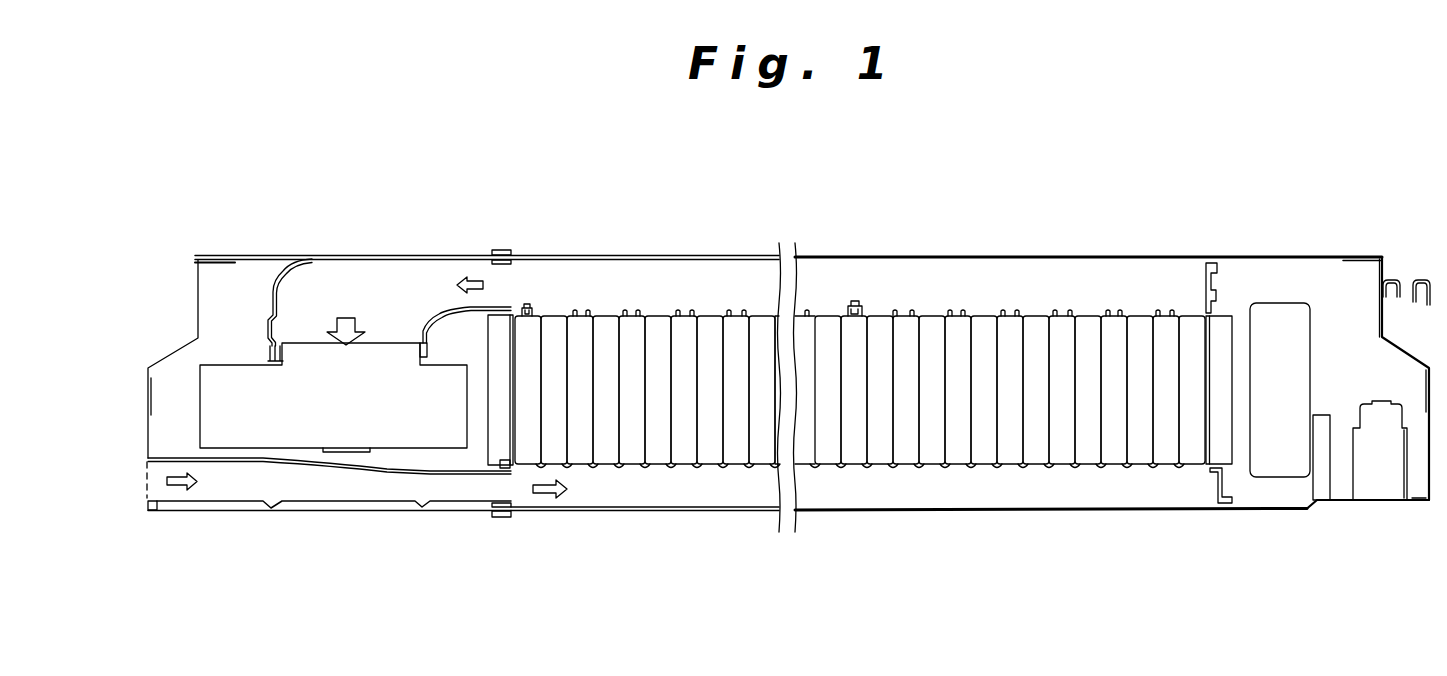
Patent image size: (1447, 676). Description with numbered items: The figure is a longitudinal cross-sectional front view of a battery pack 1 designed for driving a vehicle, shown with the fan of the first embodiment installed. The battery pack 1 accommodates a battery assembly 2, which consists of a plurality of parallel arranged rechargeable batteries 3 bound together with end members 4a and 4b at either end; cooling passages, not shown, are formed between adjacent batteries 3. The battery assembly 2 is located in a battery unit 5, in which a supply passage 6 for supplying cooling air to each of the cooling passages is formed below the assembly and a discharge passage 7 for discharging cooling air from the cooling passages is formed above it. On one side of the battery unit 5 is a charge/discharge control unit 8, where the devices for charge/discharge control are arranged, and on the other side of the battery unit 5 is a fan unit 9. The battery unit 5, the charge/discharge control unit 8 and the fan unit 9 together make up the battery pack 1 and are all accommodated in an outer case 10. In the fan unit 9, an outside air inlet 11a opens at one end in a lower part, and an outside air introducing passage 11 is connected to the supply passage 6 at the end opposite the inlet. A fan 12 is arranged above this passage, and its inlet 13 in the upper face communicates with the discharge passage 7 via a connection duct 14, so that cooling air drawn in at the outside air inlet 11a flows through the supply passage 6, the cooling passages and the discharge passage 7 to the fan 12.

The battery pack 1 is at (873, 247).
The battery assembly 2 is at (1078, 302).
The rechargeable batteries 3 is at (982, 320).
The end member 4a is at (498, 327).
The end member 4b is at (1222, 315).
The battery unit 5 is at (912, 513).
The supply passage 6 is at (831, 504).
The discharge passage 7 is at (834, 298).
The charge/discharge control unit 8 is at (1277, 512).
The fan unit 9 is at (375, 515).
The outer case 10 is at (683, 257).
The outside air introducing passage 11 is at (320, 483).
The outside air inlet 11a is at (145, 498).
The fan 12 is at (227, 382).
The inlet 13 is at (310, 352).
The connection duct 14 is at (405, 285).